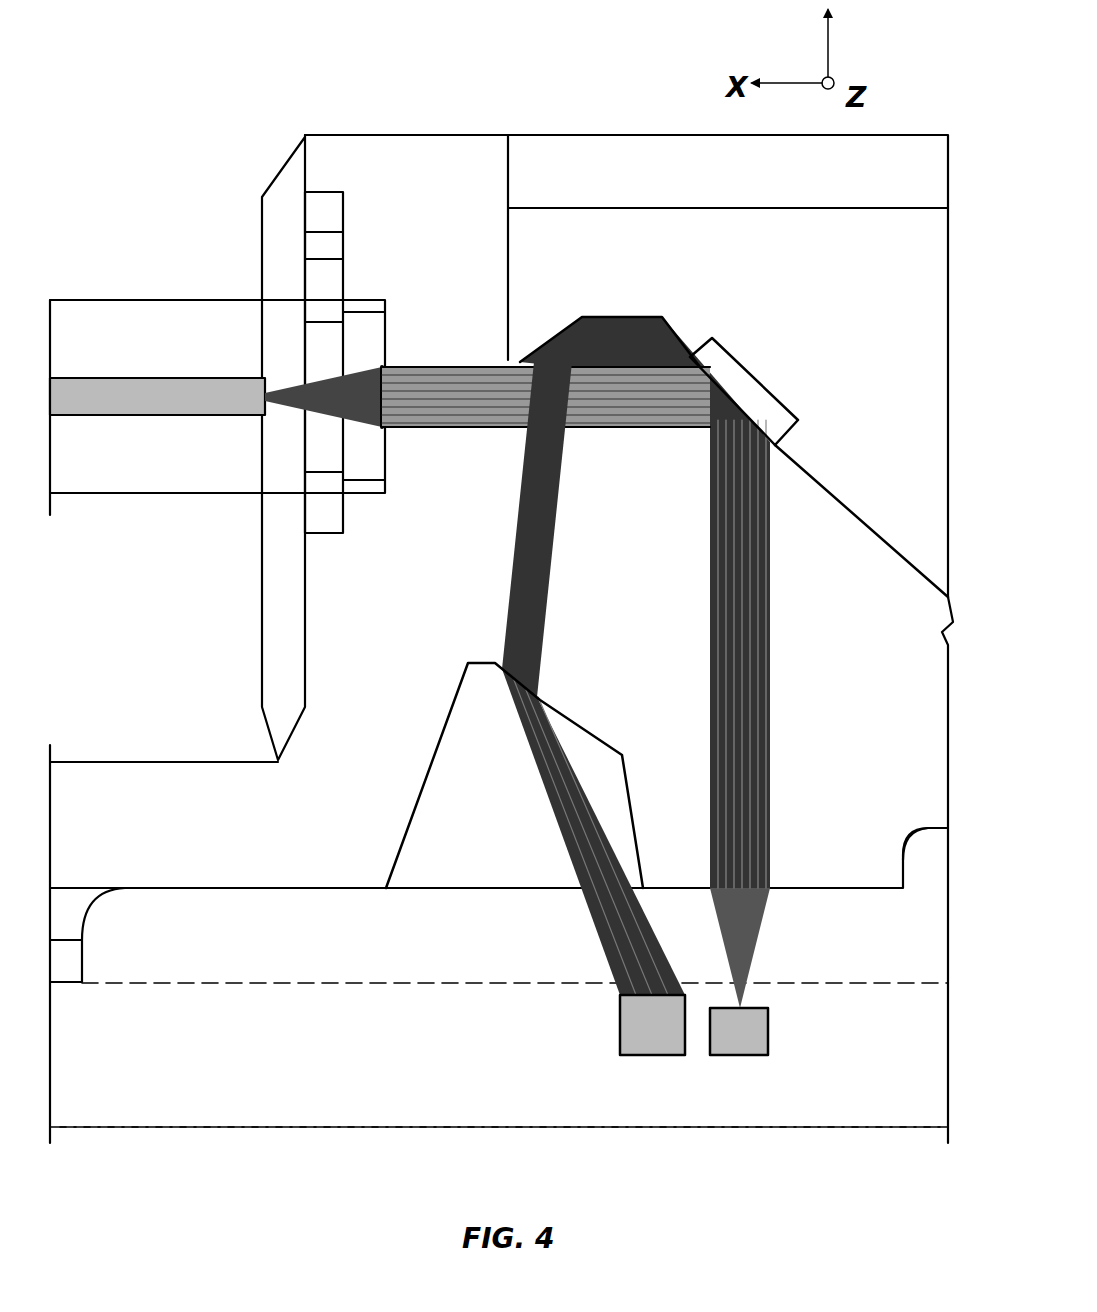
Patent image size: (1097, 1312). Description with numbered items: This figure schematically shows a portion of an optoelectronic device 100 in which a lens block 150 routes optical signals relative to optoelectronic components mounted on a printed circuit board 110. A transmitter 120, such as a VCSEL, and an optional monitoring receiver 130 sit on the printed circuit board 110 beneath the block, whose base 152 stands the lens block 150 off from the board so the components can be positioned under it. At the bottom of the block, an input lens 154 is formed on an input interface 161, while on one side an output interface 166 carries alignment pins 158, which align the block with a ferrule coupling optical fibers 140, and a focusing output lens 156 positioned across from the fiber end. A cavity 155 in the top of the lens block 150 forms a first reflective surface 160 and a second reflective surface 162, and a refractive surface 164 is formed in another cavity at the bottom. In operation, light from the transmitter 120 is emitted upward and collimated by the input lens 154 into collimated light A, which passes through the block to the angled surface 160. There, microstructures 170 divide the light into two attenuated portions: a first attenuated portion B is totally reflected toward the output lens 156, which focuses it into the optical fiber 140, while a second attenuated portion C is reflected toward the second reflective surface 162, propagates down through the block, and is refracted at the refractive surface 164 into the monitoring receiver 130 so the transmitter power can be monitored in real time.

The optoelectronic device 100 is at (135, 106).
The printed circuit board 110 is at (320, 1128).
The transmitter 120 is at (770, 1033).
The monitoring receiver 130 is at (618, 1036).
The optical fiber 140 is at (158, 377).
The lens block 150 is at (275, 96).
The base 152 is at (130, 760).
The input lens 154 is at (770, 895).
The cavity 155 is at (510, 178).
The focusing output lens 156 is at (345, 366).
The alignment pin 158 is at (118, 496).
The first reflective surface 160 is at (850, 506).
The input interface 161 is at (873, 892).
The second reflective surface 162 is at (554, 333).
The refractive surface 164 is at (557, 703).
The output interface 166 is at (315, 203).
The microstructures 170 is at (758, 380).
The collimated light A is at (768, 601).
The first attenuated portion B is at (438, 428).
The second attenuated portion C is at (567, 488).